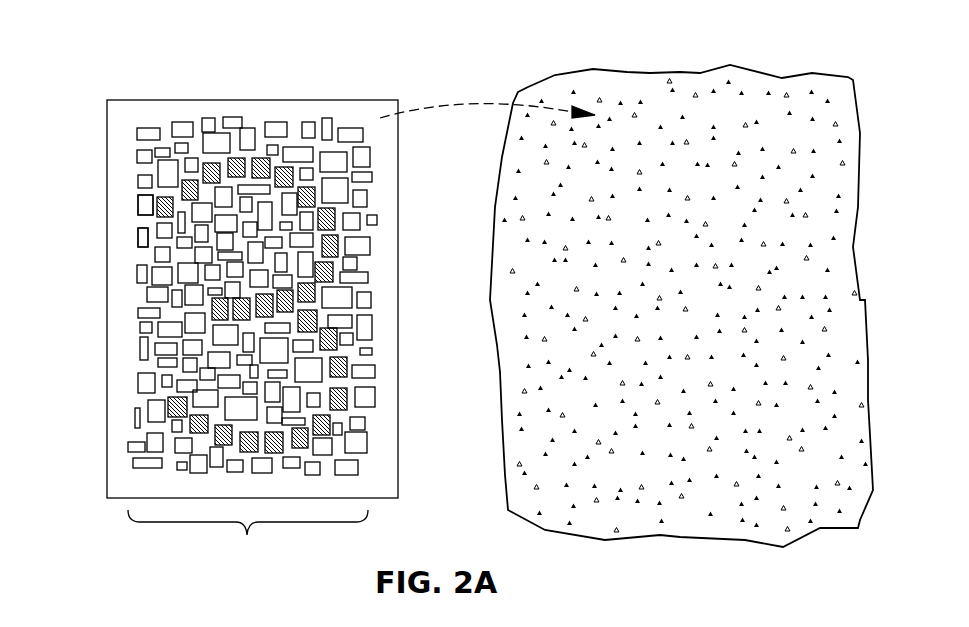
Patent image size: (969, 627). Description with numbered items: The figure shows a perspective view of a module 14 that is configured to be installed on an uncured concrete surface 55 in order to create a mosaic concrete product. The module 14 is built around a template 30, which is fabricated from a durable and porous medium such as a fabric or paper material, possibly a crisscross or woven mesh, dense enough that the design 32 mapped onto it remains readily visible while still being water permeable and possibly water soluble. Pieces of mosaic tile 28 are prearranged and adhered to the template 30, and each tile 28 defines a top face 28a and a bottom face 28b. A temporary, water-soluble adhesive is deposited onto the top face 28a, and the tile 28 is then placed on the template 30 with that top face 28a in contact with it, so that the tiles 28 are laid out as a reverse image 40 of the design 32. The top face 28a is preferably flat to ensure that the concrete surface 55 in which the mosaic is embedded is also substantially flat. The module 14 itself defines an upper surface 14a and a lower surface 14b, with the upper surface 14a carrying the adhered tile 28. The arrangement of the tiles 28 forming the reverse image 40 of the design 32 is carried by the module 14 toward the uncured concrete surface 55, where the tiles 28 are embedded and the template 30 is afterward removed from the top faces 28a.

The module 14 is at (132, 84).
The upper surface 14a is at (177, 94).
The lower surface 14b is at (237, 94).
The template 30 is at (306, 107).
The tile 28 is at (137, 205).
The top face 28a is at (137, 237).
The bottom face 28b is at (137, 274).
The design 32 is at (410, 145).
The reverse image 40 is at (248, 538).
The concrete surface 55 is at (706, 90).